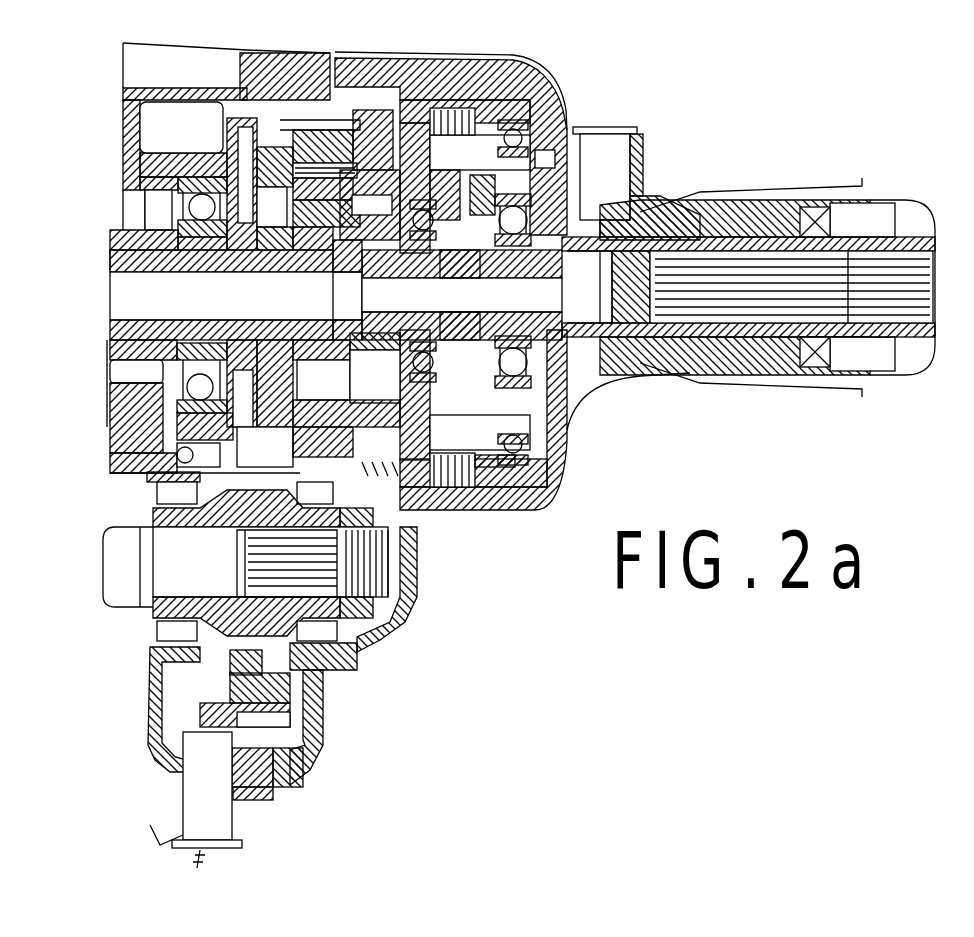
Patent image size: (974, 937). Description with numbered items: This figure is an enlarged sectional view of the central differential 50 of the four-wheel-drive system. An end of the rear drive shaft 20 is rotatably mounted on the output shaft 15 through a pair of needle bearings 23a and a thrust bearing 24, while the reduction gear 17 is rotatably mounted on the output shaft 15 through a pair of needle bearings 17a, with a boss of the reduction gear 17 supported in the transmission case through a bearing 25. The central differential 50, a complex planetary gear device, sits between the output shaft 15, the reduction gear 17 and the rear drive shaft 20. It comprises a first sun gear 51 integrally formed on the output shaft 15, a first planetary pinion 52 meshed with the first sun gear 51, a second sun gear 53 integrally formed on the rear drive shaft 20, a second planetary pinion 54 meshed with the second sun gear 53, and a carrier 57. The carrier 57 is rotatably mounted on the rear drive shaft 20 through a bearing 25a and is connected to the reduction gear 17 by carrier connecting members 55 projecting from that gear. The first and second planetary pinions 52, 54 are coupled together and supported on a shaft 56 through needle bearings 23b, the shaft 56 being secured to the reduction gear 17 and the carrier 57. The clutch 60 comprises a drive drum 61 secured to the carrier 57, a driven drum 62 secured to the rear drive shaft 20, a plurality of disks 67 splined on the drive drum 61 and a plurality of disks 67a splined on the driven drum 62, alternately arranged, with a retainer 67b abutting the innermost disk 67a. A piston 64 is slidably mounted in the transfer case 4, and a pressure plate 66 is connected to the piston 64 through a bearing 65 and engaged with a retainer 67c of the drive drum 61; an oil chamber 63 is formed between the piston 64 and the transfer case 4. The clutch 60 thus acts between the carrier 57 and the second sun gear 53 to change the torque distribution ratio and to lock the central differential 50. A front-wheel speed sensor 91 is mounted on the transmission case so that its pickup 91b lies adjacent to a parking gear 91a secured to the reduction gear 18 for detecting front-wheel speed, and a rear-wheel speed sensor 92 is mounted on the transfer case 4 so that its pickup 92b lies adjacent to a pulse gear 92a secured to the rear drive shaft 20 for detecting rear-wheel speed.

The transfer case 4 is at (292, 95).
The output shaft 15 is at (107, 280).
The reduction gear 17 is at (239, 259).
The needle bearings 17a is at (205, 258).
The reduction gear 18 is at (310, 730).
The rear drive shaft 20 is at (746, 300).
The needle bearings 23a is at (445, 298).
The needle bearings 23b is at (352, 160).
The thrust bearing 24 is at (326, 290).
The bearing 25 is at (200, 190).
The bearing 25a is at (372, 355).
The central differential 50 is at (288, 105).
The first sun gear 51 is at (320, 356).
The first planetary pinion 52 is at (302, 160).
The second sun gear 53 is at (358, 428).
The second planetary pinion 54 is at (398, 110).
The carrier connecting members 55 is at (300, 437).
The shaft 56 is at (270, 160).
The carrier 57 is at (402, 110).
The clutch 60 is at (506, 52).
The drive drum 61 is at (436, 112).
The driven drum 62 is at (420, 185).
The oil chamber 63 is at (528, 135).
The piston 64 is at (550, 130).
The bearing 65 is at (520, 122).
The pressure plate 66 is at (505, 95).
The disks 67 is at (450, 110).
The disks 67a is at (462, 510).
The retainer 67b is at (405, 472).
The retainer 67c is at (482, 510).
The front-wheel speed sensor 91 is at (237, 848).
The parking gear 91a is at (208, 725).
The pickup 91b is at (230, 824).
The rear-wheel speed sensor 92 is at (616, 130).
The pulse gear 92a is at (630, 238).
The pickup 92b is at (620, 170).